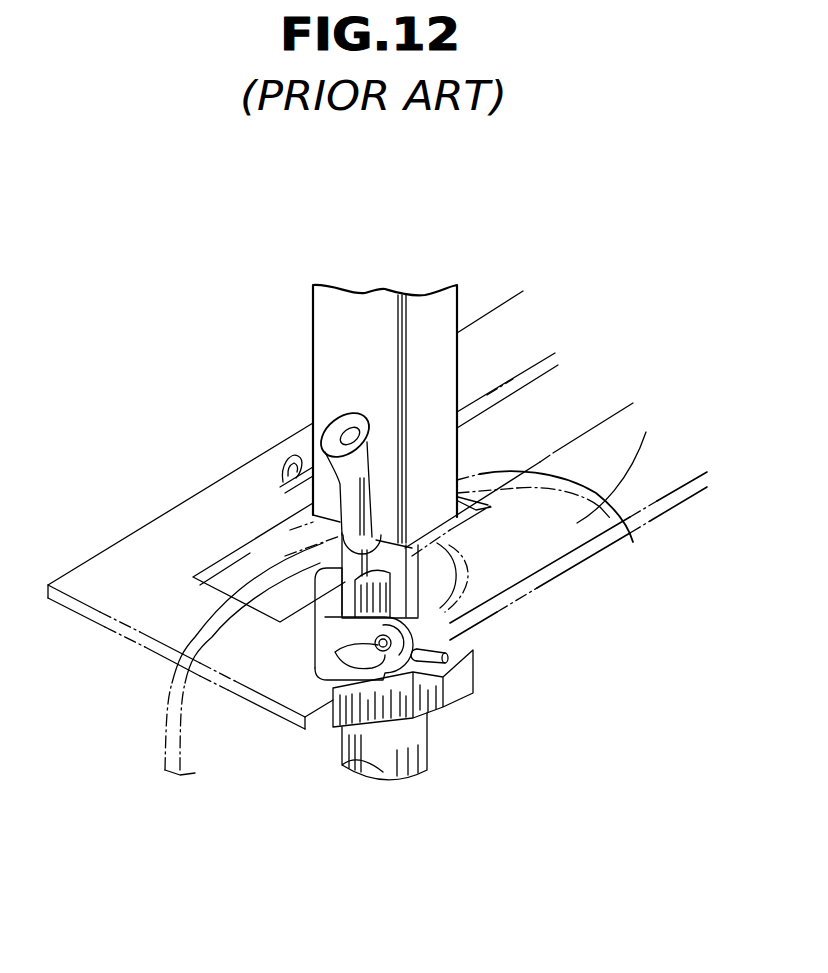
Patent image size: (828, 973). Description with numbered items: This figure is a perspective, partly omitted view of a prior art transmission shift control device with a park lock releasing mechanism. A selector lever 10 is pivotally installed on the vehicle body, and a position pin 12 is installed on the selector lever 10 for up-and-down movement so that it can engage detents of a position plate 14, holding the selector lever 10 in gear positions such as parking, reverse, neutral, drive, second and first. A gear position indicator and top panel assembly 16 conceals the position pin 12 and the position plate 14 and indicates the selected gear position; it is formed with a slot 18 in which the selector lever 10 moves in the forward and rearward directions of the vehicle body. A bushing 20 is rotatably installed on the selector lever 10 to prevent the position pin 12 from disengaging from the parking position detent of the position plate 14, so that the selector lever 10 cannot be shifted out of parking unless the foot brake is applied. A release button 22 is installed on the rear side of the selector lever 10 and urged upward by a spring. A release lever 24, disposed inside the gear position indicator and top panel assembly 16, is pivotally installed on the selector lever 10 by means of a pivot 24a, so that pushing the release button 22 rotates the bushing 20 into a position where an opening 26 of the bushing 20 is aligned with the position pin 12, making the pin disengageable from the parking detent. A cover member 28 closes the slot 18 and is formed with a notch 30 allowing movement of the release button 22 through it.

The selector lever 10 is at (327, 314).
The position pin 12 is at (458, 643).
The position plate 14 is at (646, 432).
The gear position indicator and top panel assembly 16 is at (190, 515).
The slot 18 is at (280, 525).
The bushing 20 is at (457, 690).
The release button 22 is at (377, 460).
The release lever 24 is at (322, 703).
The pivot 24a is at (383, 650).
The opening 26 is at (466, 666).
The cover member 28 is at (262, 592).
The notch 30 is at (460, 460).